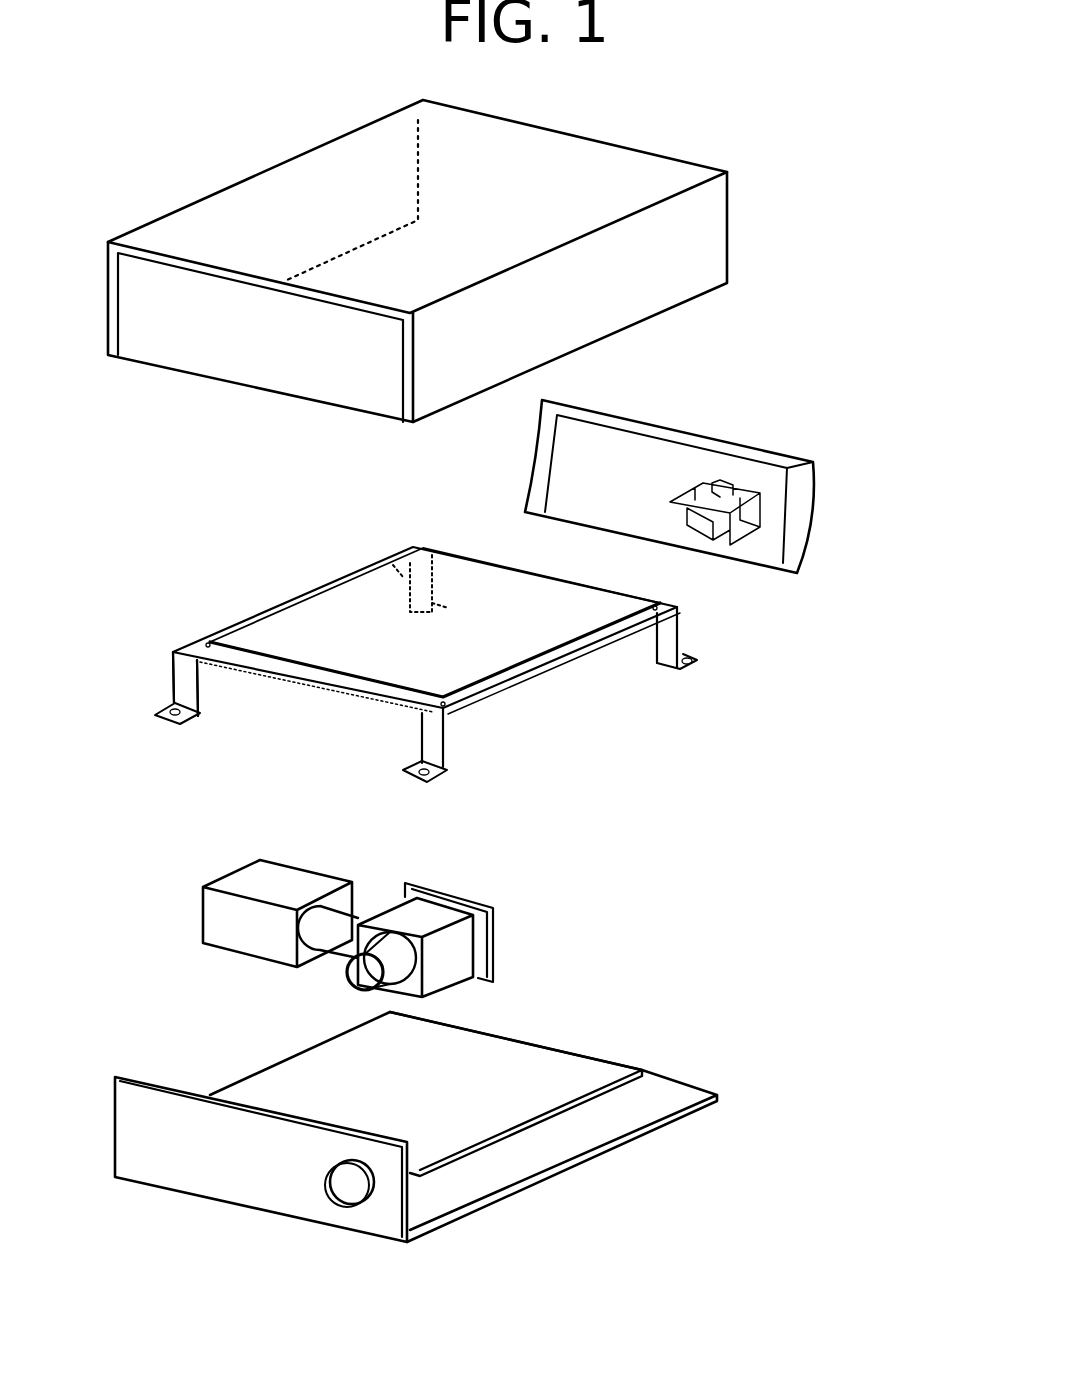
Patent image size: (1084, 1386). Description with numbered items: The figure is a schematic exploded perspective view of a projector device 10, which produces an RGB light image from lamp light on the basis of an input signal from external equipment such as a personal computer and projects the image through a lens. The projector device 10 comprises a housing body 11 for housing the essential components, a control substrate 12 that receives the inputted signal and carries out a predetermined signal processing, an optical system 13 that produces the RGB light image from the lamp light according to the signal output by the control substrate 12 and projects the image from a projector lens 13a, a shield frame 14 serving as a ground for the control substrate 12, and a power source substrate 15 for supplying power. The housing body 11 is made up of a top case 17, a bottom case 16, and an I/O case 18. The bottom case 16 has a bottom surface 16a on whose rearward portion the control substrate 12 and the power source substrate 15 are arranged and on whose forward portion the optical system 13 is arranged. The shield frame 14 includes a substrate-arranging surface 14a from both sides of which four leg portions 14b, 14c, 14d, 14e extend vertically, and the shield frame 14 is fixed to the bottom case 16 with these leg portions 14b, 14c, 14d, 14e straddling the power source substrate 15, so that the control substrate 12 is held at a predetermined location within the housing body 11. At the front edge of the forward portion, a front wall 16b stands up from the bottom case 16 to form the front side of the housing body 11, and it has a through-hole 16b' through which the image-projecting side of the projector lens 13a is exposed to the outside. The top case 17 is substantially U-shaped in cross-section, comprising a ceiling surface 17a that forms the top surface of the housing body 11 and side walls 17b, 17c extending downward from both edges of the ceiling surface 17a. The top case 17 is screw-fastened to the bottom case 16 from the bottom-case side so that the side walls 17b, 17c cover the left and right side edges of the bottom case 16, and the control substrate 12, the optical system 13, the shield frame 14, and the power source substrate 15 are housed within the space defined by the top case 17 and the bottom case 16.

The projector device 10 is at (794, 1273).
The housing body 11 is at (876, 356).
The control substrate 12 is at (315, 600).
The optical system 13 is at (313, 926).
The projector lens 13a is at (348, 978).
The shield frame 14 is at (426, 651).
The substrate-arranging surface 14a is at (200, 641).
The leg portion 14b is at (203, 690).
The leg portion 14c is at (450, 750).
The leg portion 14d is at (657, 667).
The leg portion 14e is at (385, 552).
The power source substrate 15 is at (587, 1063).
The bottom case 16 is at (495, 1126).
The bottom surface 16a is at (562, 1173).
The front wall 16b is at (276, 1169).
The through-hole 16b' is at (381, 1132).
The top case 17 is at (493, 257).
The ceiling surface 17a is at (270, 183).
The side wall 17b is at (167, 320).
The side wall 17c is at (627, 310).
The I/O case 18 is at (812, 552).